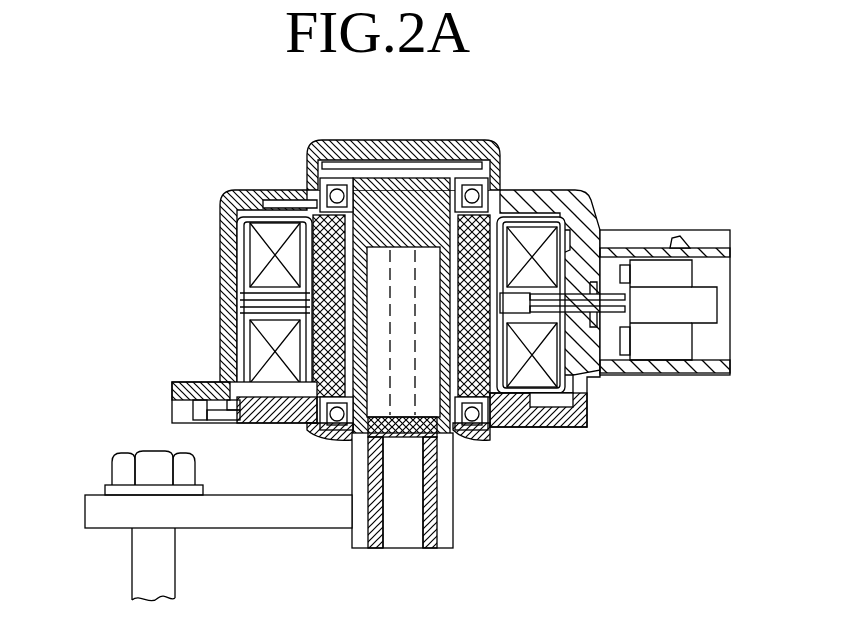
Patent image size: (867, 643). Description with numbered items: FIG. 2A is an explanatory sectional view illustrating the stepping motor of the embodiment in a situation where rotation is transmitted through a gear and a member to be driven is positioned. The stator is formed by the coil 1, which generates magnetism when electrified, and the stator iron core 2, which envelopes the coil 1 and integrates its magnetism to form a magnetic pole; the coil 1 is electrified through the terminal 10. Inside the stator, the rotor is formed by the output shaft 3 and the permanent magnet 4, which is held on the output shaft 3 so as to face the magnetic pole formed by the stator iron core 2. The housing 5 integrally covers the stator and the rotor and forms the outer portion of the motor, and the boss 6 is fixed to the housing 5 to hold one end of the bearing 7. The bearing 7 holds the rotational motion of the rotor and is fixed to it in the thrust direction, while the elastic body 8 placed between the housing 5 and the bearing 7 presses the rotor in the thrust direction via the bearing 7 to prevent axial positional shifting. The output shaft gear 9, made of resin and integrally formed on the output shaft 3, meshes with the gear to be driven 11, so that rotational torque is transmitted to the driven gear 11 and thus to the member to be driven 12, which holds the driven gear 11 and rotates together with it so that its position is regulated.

The coil 1 is at (537, 233).
The stator iron core 2 is at (573, 237).
The output shaft 3 is at (430, 398).
The permanent magnet 4 is at (587, 397).
The housing 5 is at (223, 203).
The boss 6 is at (307, 430).
The bearing 7 is at (250, 320).
The elastic body 8 is at (307, 164).
The output shaft gear 9 is at (455, 515).
The terminal 10 is at (707, 313).
The gear to be driven 11 is at (290, 517).
The member to be driven 12 is at (137, 576).